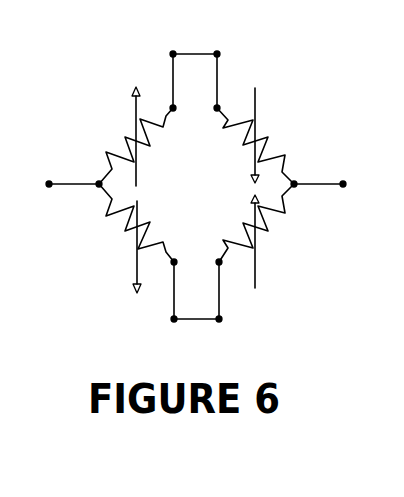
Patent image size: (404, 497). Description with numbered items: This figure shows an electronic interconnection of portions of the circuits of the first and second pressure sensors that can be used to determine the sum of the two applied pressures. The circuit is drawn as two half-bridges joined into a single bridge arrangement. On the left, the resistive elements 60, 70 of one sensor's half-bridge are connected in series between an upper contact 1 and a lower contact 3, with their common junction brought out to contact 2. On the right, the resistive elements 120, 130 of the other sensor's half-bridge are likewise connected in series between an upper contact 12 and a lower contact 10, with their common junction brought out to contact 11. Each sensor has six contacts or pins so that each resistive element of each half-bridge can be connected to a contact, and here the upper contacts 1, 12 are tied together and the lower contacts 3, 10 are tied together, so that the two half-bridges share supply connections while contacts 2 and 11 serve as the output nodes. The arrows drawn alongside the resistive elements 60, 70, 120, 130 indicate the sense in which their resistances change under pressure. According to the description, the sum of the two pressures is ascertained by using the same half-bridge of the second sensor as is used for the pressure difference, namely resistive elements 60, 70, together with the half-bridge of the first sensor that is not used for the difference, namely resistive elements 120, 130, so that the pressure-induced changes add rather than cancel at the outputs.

The contact 1 is at (173, 68).
The contact 2 is at (64, 184).
The contact 3 is at (175, 306).
The contact 10 is at (227, 306).
The contact 11 is at (332, 184).
The contact 12 is at (222, 68).
The resistive element 60 is at (118, 146).
The resistive element 70 is at (111, 234).
The resistive element 120 is at (281, 235).
The resistive element 130 is at (277, 144).